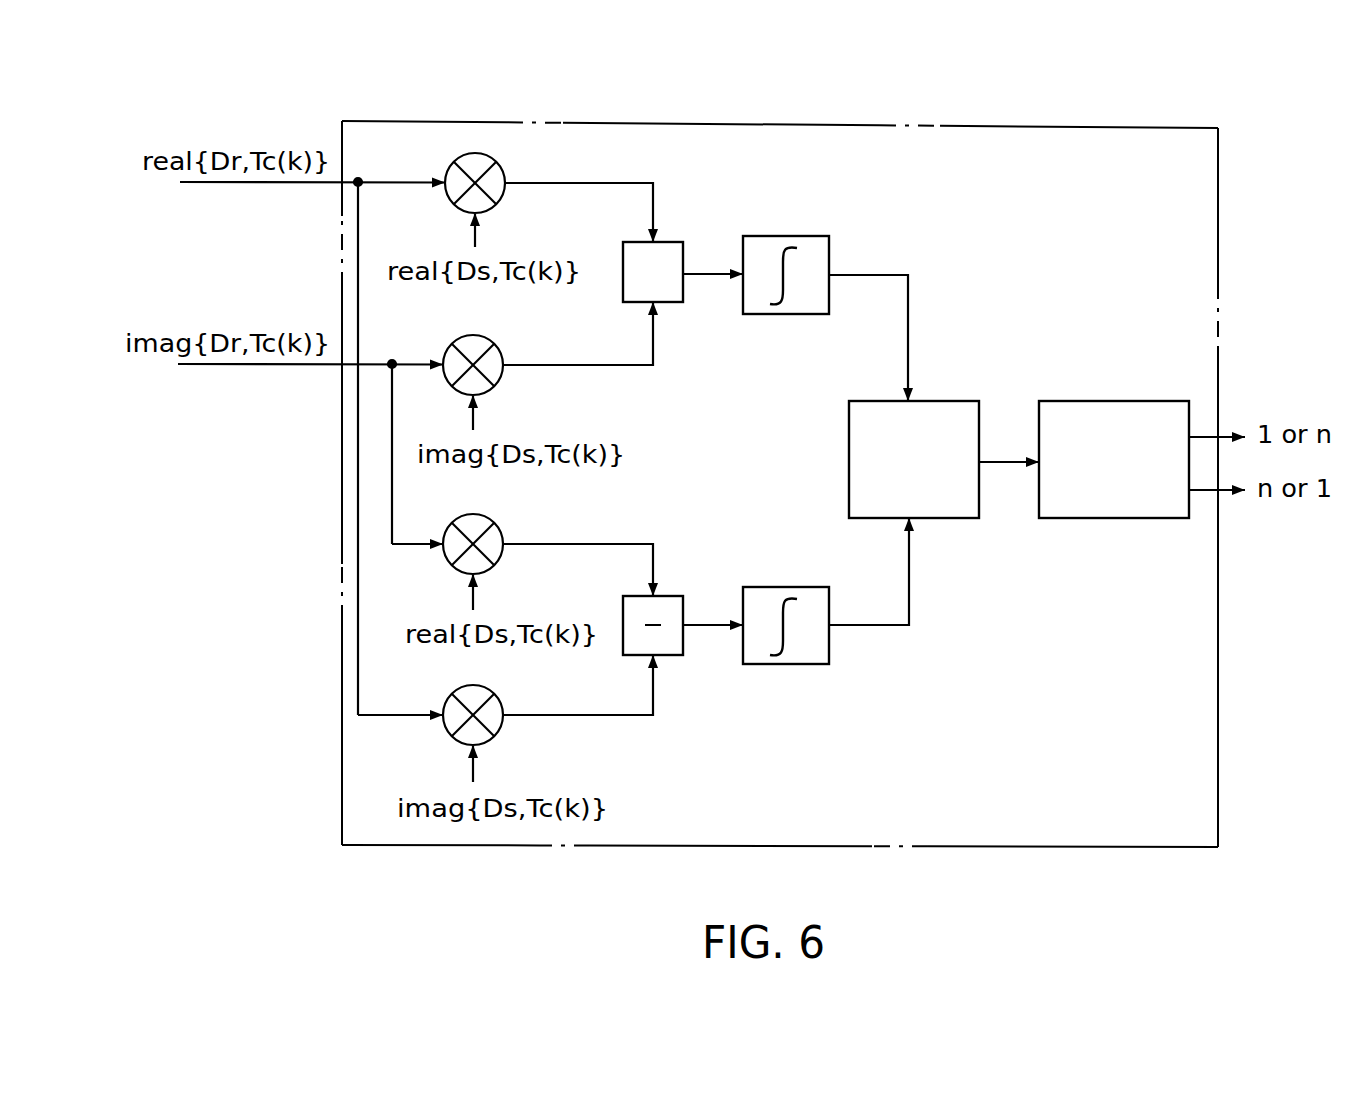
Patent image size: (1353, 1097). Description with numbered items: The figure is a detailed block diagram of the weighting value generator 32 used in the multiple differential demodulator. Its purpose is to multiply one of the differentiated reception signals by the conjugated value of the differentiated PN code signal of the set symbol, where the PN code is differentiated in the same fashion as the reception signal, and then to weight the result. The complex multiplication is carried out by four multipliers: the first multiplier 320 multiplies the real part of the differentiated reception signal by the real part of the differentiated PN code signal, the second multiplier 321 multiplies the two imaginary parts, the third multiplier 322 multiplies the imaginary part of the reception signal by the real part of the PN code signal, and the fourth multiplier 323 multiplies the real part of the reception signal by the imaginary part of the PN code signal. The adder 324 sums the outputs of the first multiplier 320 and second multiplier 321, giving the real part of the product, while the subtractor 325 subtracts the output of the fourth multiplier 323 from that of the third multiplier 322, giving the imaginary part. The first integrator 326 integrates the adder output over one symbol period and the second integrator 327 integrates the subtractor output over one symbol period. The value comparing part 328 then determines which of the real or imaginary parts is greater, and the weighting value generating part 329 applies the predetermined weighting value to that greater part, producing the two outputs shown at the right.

The weighting value generator 32 is at (716, 124).
The first multiplier 320 is at (493, 162).
The second multiplier 321 is at (495, 383).
The third multiplier 322 is at (500, 527).
The fourth multiplier 323 is at (497, 733).
The adder 324 is at (670, 302).
The subtractor 325 is at (670, 655).
The first integrator 326 is at (815, 236).
The second integrator 327 is at (810, 664).
The value comparing part 328 is at (956, 518).
The weighting value generating part 329 is at (1133, 401).